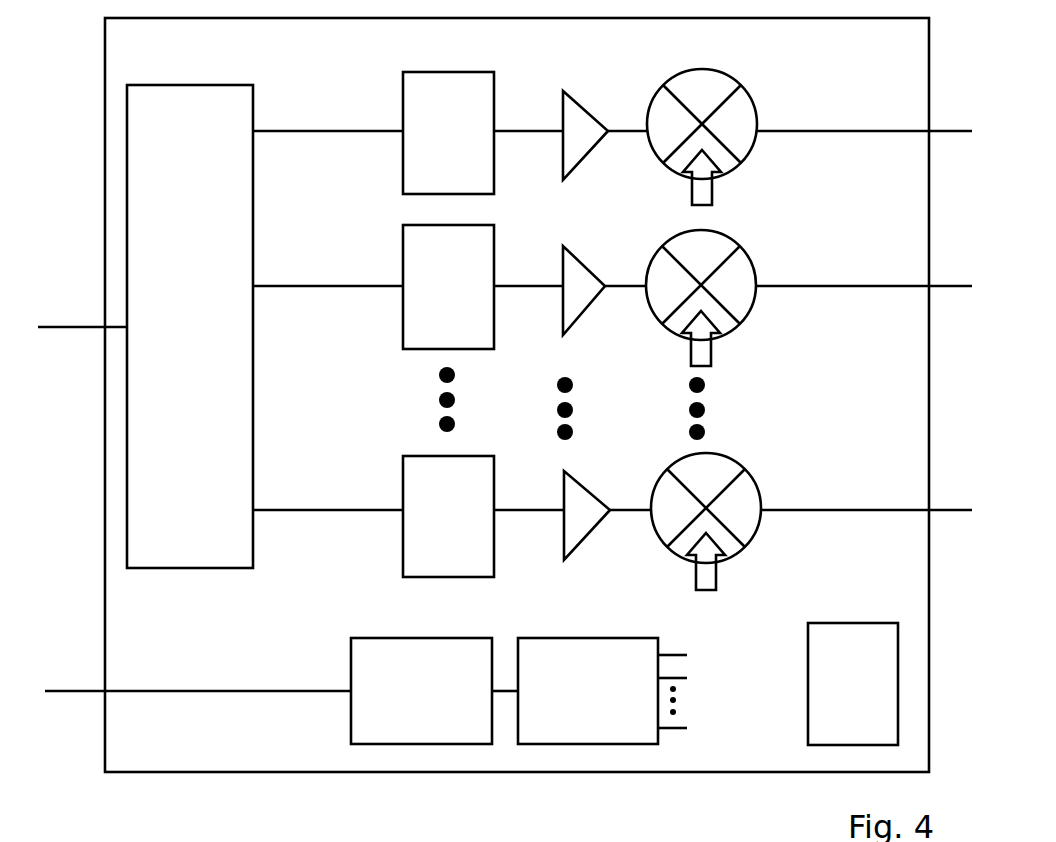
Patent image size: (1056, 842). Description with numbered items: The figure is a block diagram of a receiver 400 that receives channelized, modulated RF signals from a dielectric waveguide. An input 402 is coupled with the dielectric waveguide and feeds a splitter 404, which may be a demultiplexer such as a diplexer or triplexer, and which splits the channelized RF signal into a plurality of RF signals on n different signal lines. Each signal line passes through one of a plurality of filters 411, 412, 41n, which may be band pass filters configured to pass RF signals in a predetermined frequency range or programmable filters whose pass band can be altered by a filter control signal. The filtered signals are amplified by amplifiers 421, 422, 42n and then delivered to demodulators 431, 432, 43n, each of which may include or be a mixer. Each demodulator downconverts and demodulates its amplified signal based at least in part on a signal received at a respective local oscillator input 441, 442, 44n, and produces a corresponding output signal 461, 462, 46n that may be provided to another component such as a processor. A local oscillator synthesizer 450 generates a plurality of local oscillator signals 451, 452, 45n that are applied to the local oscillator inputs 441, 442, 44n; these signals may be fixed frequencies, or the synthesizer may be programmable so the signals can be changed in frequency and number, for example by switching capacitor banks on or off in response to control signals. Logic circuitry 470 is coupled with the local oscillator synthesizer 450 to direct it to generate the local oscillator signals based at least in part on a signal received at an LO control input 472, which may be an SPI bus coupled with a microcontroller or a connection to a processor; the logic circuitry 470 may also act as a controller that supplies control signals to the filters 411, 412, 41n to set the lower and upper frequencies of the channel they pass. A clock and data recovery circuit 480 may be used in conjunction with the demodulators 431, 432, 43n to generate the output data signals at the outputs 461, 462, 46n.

The receiver 400 is at (556, 793).
The input 402 is at (83, 326).
The splitter 404 is at (171, 352).
The filter 411 is at (469, 146).
The filter 412 is at (469, 300).
The filter 41n is at (469, 524).
The amplifier 421 is at (585, 110).
The amplifier 422 is at (584, 262).
The amplifier 42n is at (585, 488).
The demodulator 431 is at (735, 76).
The demodulator 432 is at (728, 236).
The demodulator 43n is at (708, 453).
The local oscillator input 441 is at (691, 185).
The local oscillator input 442 is at (689, 347).
The local oscillator input 44n is at (696, 563).
The local oscillator synthesizer 450 is at (567, 704).
The local oscillator signal 451 is at (682, 656).
The local oscillator signal 452 is at (682, 679).
The local oscillator signal 45n is at (682, 729).
The output signal 461 is at (945, 131).
The output signal 462 is at (945, 286).
The output signal 46n is at (945, 510).
The logic circuitry 470 is at (400, 704).
The LO control input 472 is at (82, 690).
The clock and data recovery circuit 480 is at (832, 695).